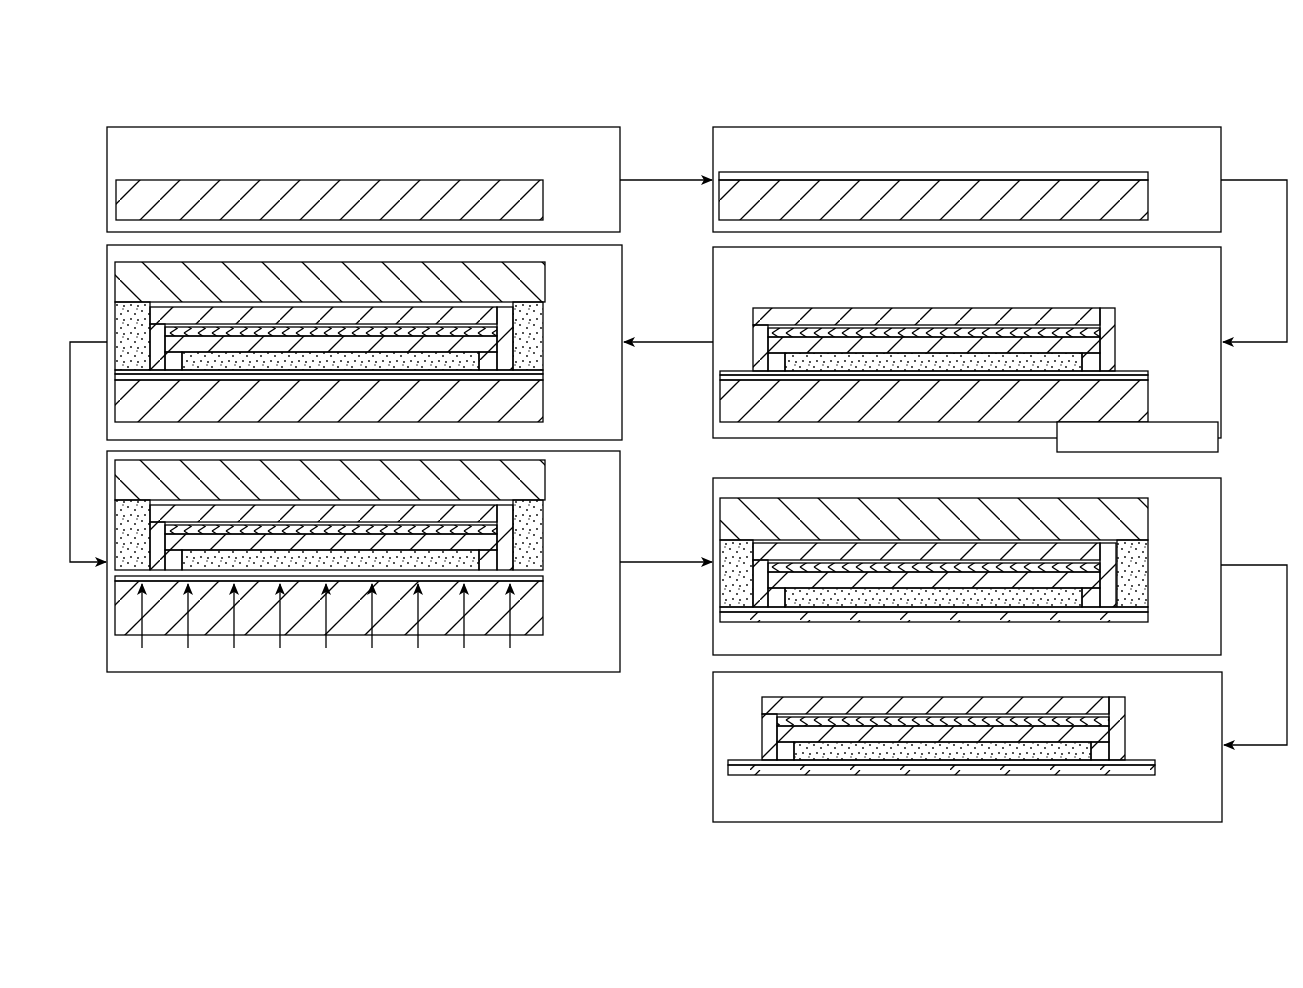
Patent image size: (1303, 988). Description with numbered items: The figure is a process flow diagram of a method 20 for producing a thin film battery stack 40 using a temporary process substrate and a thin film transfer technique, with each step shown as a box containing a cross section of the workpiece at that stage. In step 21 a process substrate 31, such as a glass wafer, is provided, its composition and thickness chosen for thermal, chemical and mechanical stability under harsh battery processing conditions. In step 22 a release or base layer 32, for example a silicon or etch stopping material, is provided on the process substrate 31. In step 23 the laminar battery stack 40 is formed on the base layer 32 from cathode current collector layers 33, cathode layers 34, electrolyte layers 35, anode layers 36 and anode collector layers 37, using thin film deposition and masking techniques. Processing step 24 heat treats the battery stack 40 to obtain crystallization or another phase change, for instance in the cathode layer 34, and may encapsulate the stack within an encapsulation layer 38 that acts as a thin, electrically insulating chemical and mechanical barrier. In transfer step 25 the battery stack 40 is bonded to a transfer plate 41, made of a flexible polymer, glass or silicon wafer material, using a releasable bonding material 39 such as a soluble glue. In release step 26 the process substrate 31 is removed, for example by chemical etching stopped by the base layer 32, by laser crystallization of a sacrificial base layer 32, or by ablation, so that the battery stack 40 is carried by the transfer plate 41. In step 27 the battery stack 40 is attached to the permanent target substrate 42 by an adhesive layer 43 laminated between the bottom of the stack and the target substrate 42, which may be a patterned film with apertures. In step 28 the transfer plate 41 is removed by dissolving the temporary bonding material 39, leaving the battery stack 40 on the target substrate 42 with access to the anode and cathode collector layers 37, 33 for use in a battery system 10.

The method 20 is at (118, 88).
The step of providing a process substrate 21 is at (620, 165).
The step of providing a base layer 22 is at (1222, 165).
The step of forming battery layers 23 is at (1222, 310).
The processing step 24 is at (1220, 440).
The transfer step 25 is at (622, 275).
The release step 26 is at (620, 475).
The step of attaching to permanent substrate 27 is at (1222, 530).
The step of removing transfer plate 28 is at (1222, 725).
The battery system 10 is at (1172, 802).
The process substrate 31 is at (136, 211).
The base layer 32 is at (778, 176).
The cathode current collector layer 33 is at (737, 370).
The cathode layer 34 is at (808, 352).
The electrolyte layer 35 is at (945, 333).
The anode layer 36 is at (1010, 362).
The anode collector layer 37 is at (1118, 356).
The encapsulation layer 38 is at (860, 312).
The releasable bonding material 39 is at (527, 356).
The battery stack 40 is at (537, 320).
The transfer plate 41 is at (131, 291).
The target substrate 42 is at (1060, 616).
The adhesive layer 43 is at (1152, 610).